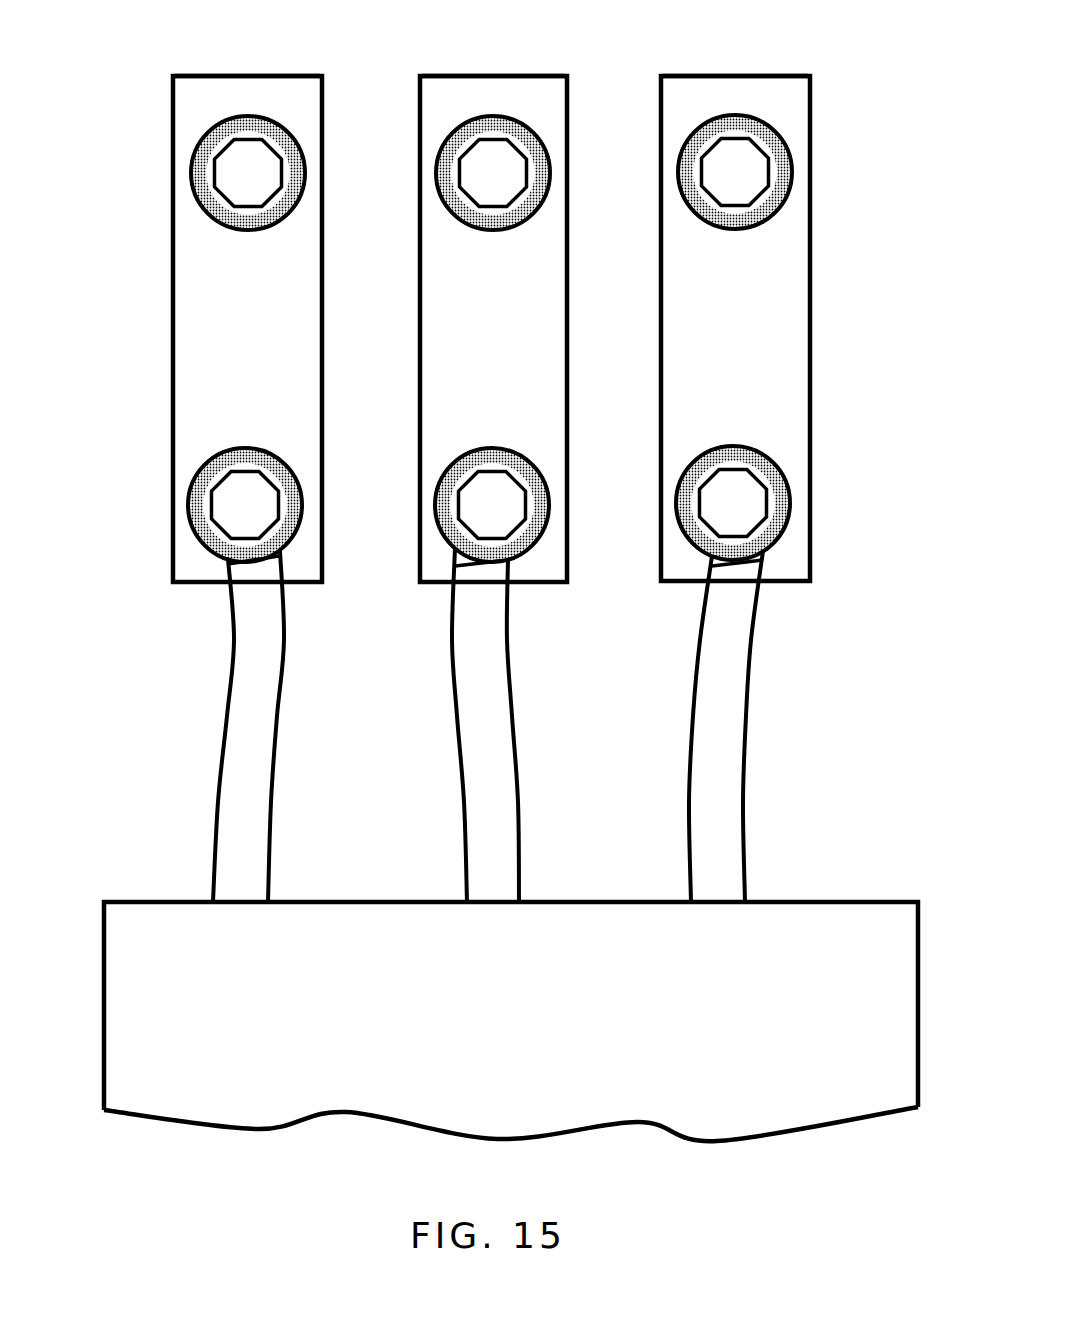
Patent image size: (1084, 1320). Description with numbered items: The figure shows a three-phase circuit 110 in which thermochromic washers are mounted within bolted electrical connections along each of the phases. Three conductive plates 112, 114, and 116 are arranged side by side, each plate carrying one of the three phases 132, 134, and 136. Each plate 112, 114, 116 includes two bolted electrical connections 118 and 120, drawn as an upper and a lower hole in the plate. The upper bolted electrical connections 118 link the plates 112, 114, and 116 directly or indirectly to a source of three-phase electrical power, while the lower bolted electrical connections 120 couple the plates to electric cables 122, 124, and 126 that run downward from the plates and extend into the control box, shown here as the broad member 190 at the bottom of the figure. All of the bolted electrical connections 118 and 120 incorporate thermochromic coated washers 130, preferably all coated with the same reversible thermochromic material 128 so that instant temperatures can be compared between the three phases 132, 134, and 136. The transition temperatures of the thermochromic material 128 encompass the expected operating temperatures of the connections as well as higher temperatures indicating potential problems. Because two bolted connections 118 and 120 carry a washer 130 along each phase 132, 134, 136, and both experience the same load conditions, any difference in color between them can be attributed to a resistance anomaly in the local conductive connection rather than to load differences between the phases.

The three-phase circuit 110 is at (172, 52).
The conductive plate 112 is at (262, 352).
The conductive plate 114 is at (514, 355).
The conductive plate 116 is at (752, 357).
The bolted electrical connection 118 is at (230, 178).
The bolted electrical connection 120 is at (220, 512).
The electric cable 122 is at (262, 794).
The electric cable 124 is at (508, 786).
The electric cable 126 is at (733, 772).
The reversible thermochromic material 128 is at (262, 116).
The thermochromic coated washer 130 is at (292, 210).
The phase 132 is at (258, 72).
The phase 134 is at (486, 72).
The phase 136 is at (732, 62).
The base member 190 is at (522, 1053).